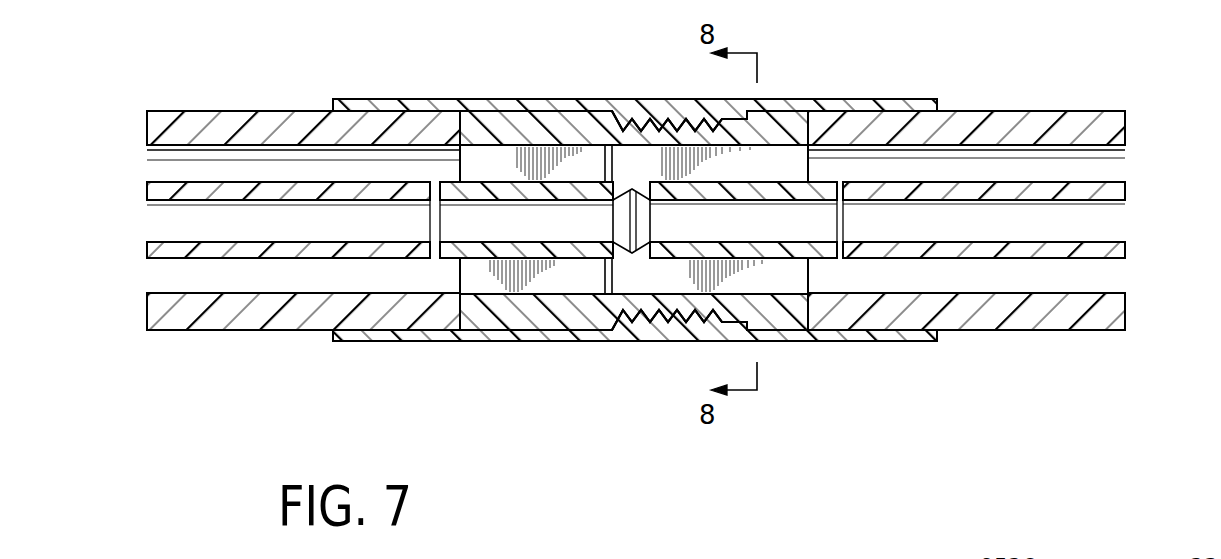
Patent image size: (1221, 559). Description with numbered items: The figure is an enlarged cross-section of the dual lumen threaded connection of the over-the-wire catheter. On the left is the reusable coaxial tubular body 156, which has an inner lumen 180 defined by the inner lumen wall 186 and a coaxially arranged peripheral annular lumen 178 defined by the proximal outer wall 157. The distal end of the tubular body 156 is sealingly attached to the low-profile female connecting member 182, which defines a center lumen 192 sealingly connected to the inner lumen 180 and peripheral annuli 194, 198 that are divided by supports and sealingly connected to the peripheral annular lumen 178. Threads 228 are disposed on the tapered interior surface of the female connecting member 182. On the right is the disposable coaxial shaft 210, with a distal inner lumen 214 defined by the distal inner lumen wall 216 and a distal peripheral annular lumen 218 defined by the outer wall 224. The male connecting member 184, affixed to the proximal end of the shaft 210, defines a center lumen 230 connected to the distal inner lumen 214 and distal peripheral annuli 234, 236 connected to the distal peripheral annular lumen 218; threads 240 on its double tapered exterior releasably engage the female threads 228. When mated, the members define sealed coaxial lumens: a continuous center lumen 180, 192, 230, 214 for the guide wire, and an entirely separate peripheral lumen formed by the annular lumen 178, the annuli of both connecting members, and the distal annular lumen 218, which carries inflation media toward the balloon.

The coaxial tubular body 156 is at (270, 238).
The proximal outer wall 157 is at (183, 110).
The peripheral annular lumen 178 is at (300, 162).
The inner lumen 180 is at (333, 225).
The female connecting member 182 is at (410, 341).
The male connecting member 184 is at (873, 341).
The inner lumen wall 186 is at (162, 228).
The center lumen 192 is at (553, 225).
The peripheral annulus 194 is at (483, 158).
The peripheral annulus 198 is at (497, 283).
The coaxial shaft 210 is at (1005, 271).
The distal inner lumen 214 is at (1008, 225).
The distal inner lumen wall 216 is at (1112, 192).
The distal peripheral annular lumen 218 is at (1117, 165).
The outer wall 224 is at (1092, 318).
The female connecting threads 228 is at (663, 325).
The center lumen 230 is at (770, 225).
The distal peripheral annulus 234 is at (777, 155).
The distal peripheral annulus 236 is at (776, 285).
The male connecting threads 240 is at (667, 123).